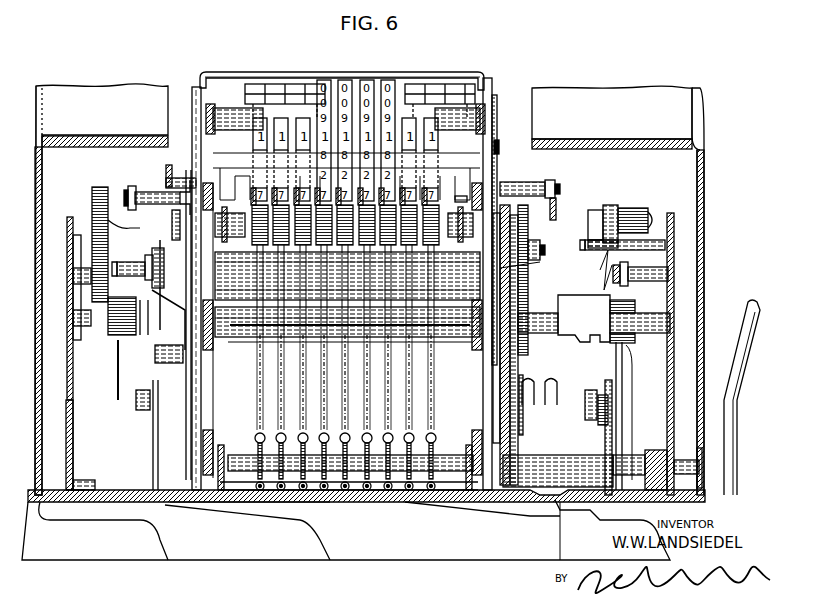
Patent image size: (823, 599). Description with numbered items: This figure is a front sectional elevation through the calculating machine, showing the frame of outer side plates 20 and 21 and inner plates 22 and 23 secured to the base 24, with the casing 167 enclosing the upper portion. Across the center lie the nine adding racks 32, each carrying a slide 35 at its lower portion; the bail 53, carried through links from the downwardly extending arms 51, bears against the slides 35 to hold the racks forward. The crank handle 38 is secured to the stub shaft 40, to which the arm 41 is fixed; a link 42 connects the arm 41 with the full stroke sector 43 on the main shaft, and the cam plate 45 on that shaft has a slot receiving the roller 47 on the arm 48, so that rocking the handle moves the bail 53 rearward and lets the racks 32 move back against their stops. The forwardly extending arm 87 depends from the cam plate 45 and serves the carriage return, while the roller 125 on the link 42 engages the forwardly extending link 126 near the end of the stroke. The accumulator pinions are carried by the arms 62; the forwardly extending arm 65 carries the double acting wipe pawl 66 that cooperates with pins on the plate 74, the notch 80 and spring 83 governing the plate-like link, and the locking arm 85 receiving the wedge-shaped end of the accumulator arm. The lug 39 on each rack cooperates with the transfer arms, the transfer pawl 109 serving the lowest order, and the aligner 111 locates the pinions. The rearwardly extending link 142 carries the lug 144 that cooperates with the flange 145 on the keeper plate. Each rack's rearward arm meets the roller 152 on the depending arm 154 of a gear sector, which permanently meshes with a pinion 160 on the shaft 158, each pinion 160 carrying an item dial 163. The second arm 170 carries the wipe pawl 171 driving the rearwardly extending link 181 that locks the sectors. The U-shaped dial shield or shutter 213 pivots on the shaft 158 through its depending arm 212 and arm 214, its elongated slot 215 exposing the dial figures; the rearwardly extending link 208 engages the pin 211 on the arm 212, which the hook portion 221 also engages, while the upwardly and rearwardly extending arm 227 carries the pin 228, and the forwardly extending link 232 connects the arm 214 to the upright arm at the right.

The outer side plate 20 is at (70, 445).
The outer side plate 21 is at (674, 228).
The inner plate 22 is at (208, 120).
The inner plate 23 is at (488, 110).
The base 24 is at (265, 555).
The adding rack 32 is at (420, 346).
The slide 35 is at (420, 478).
The crank handle 38 is at (758, 335).
The lug 39 is at (520, 262).
The stub shaft 40 is at (545, 505).
The arm 41 is at (612, 440).
The link 42 is at (605, 355).
The full stroke sector 43 is at (607, 210).
The cam plate 45 is at (510, 240).
The roller 47 is at (548, 270).
The arm 48 is at (505, 228).
The downwardly extending arm 51 is at (222, 440).
The bail 53 is at (452, 462).
The arm 62 is at (245, 210).
The forwardly extending arm 65 is at (250, 350).
The double acting wipe pawl 66 is at (165, 250).
The plate 74 is at (182, 365).
The notch 80 is at (430, 205).
The spring 83 is at (172, 218).
The locking arm 85 is at (188, 185).
The forwardly extending arm 87 is at (538, 395).
The transfer pawl 109 is at (498, 258).
The aligner 111 is at (440, 125).
The roller 125 is at (625, 208).
The forwardly extending link 126 is at (640, 275).
The rearwardly extending link 142 is at (72, 278).
The lug 144 is at (118, 350).
The flange 145 is at (96, 202).
The roller 152 is at (435, 380).
The depending arm 154 is at (265, 345).
The shaft 158 is at (500, 145).
The pinion 160 is at (258, 126).
The item dial 163 is at (376, 82).
The casing 167 is at (635, 105).
The second arm 170 is at (140, 388).
The wipe pawl 171 is at (158, 410).
The rearwardly extending link 181 is at (152, 348).
The rearwardly extending link 208 is at (108, 220).
The pin 211 is at (148, 192).
The depending arm 212 is at (192, 130).
The dial shield or shutter 213 is at (232, 76).
The arm 214 is at (497, 115).
The elongated slot 215 is at (308, 82).
The hook portion 221 is at (168, 168).
The upwardly and rearwardly extending arm 227 is at (160, 258).
The pin 228 is at (118, 268).
The forwardly extending link 232 is at (555, 210).